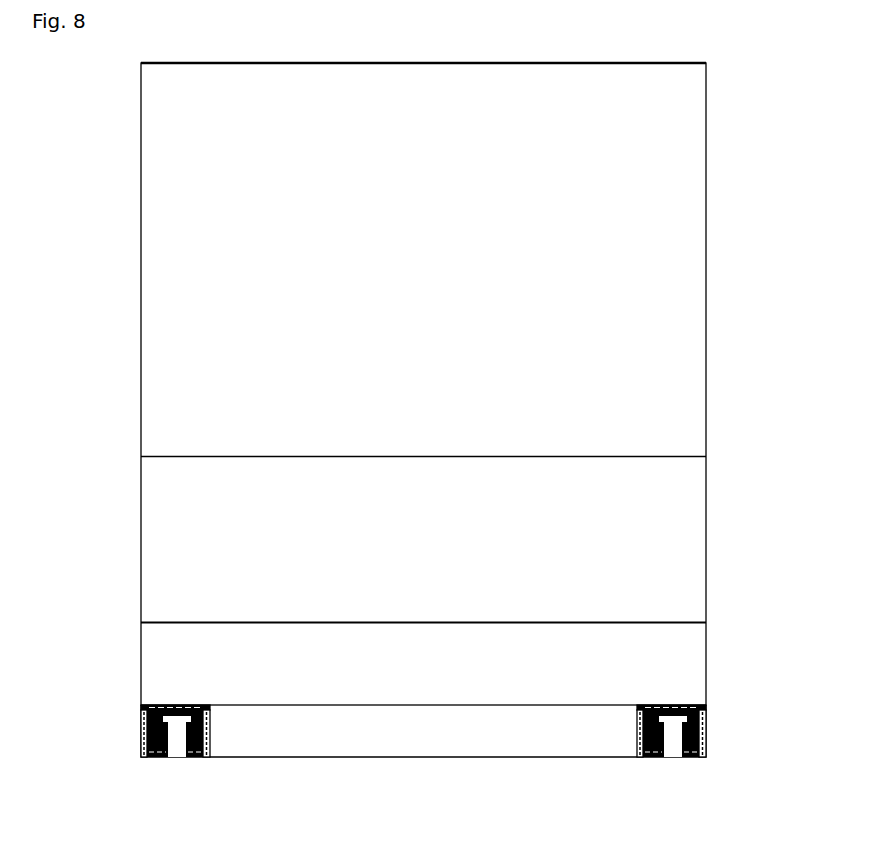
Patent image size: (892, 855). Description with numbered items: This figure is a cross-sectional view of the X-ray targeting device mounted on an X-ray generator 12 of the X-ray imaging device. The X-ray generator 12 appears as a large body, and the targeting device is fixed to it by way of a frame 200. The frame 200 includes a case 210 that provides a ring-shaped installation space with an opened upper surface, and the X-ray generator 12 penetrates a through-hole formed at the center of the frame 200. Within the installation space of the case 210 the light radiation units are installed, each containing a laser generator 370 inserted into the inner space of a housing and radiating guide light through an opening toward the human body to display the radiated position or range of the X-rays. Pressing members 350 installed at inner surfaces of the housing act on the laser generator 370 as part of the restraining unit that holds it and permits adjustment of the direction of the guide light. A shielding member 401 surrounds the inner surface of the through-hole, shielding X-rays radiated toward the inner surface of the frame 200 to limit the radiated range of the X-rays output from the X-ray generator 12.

The X-ray generator 12 is at (694, 350).
The frame 200 is at (416, 751).
The case 210 is at (706, 737).
The pressing member 350 is at (143, 757).
The laser generator 370 is at (175, 748).
The shielding member 401 is at (213, 745).